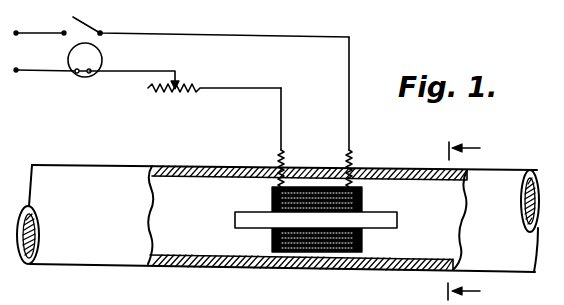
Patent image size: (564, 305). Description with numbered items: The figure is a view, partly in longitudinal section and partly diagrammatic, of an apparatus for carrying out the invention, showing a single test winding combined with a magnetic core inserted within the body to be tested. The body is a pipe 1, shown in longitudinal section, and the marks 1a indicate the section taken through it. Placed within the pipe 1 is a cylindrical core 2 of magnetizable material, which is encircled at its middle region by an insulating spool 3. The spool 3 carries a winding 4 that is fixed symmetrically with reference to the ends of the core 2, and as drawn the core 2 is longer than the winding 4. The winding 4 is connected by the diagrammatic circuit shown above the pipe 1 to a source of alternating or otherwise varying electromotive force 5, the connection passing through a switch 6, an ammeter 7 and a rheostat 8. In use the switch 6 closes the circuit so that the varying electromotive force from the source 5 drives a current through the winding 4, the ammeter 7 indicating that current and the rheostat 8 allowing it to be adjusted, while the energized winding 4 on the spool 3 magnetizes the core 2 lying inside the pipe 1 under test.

The pipe 1 is at (524, 172).
The section line 1a is at (449, 220).
The cylindrical core 2 is at (398, 218).
The insulating spool 3 is at (362, 190).
The winding 4 is at (312, 190).
The source of alternating or otherwise varying electromotive force 5 is at (17, 53).
The switch 6 is at (102, 30).
The ammeter 7 is at (75, 76).
The rheostat 8 is at (188, 88).